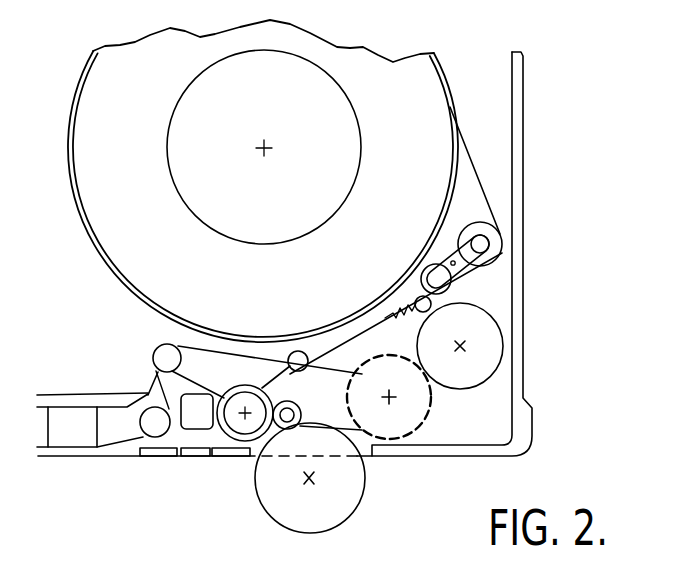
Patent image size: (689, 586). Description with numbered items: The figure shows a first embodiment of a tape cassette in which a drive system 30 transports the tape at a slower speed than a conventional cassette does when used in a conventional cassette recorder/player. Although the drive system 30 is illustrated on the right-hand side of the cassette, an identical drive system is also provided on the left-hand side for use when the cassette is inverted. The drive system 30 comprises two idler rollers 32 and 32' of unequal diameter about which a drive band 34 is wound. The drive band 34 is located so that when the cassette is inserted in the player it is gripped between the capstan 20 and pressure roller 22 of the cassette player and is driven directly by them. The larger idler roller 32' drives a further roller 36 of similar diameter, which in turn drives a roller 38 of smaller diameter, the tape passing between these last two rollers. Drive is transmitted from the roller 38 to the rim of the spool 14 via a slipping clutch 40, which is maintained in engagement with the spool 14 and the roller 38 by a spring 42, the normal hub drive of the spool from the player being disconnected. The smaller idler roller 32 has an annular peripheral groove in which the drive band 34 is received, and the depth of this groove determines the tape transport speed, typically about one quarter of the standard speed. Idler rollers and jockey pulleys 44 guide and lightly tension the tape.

The tape spool 14 is at (313, 135).
The capstan 20 is at (282, 429).
The pressure roller 22 is at (285, 513).
The drive system 30 is at (440, 424).
The idler roller 32 is at (220, 449).
The idler roller 32' is at (389, 433).
The drive band 34 is at (339, 368).
The further roller 36 is at (485, 357).
The roller 38 is at (432, 299).
The slipping clutch 40 is at (432, 283).
The spring 42 is at (417, 300).
The idler rollers and jockey pulleys 44 is at (167, 358).